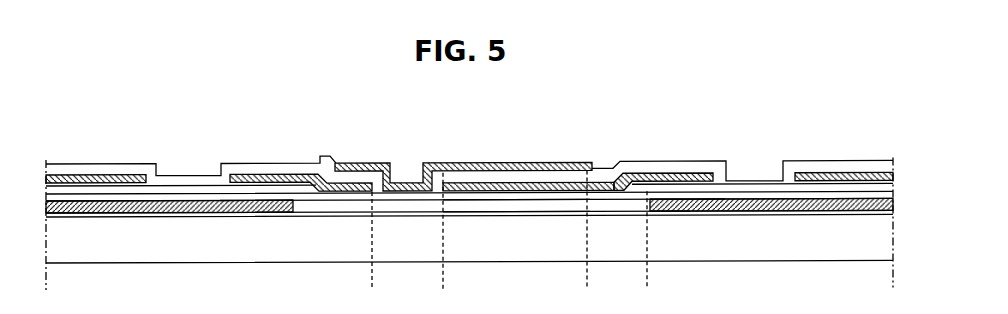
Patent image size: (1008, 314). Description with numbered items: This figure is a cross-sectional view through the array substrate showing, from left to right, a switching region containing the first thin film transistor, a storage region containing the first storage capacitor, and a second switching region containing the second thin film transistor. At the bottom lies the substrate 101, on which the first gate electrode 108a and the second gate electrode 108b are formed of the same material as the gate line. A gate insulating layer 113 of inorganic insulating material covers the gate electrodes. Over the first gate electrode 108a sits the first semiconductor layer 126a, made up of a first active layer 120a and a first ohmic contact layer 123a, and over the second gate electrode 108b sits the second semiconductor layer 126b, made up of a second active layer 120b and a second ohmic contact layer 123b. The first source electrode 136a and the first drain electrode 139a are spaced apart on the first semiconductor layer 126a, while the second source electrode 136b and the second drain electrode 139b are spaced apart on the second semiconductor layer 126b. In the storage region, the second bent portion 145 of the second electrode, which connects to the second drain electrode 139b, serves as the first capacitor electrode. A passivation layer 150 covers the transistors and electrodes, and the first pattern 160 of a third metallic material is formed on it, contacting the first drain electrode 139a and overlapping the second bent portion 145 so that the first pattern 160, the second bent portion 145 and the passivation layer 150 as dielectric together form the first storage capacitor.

The substrate 101 is at (883, 250).
The first gate electrode 108a is at (80, 183).
The second gate electrode 108b is at (755, 210).
The gate insulating layer 113 is at (460, 207).
The first active layer 120a is at (293, 188).
The second active layer 120b is at (648, 192).
The first ohmic contact layer 123a is at (307, 190).
The second ohmic contact layer 123b is at (680, 192).
The first semiconductor layer 126a is at (300, 214).
The second semiconductor layer 126b is at (472, 192).
The first source electrode 136a is at (103, 175).
The second source electrode 136b is at (828, 175).
The first drain electrode 139a is at (260, 175).
The second drain electrode 139b is at (637, 175).
The second bent portion 145 is at (508, 192).
The passivation layer 150 is at (605, 178).
The first pattern 160 is at (489, 164).